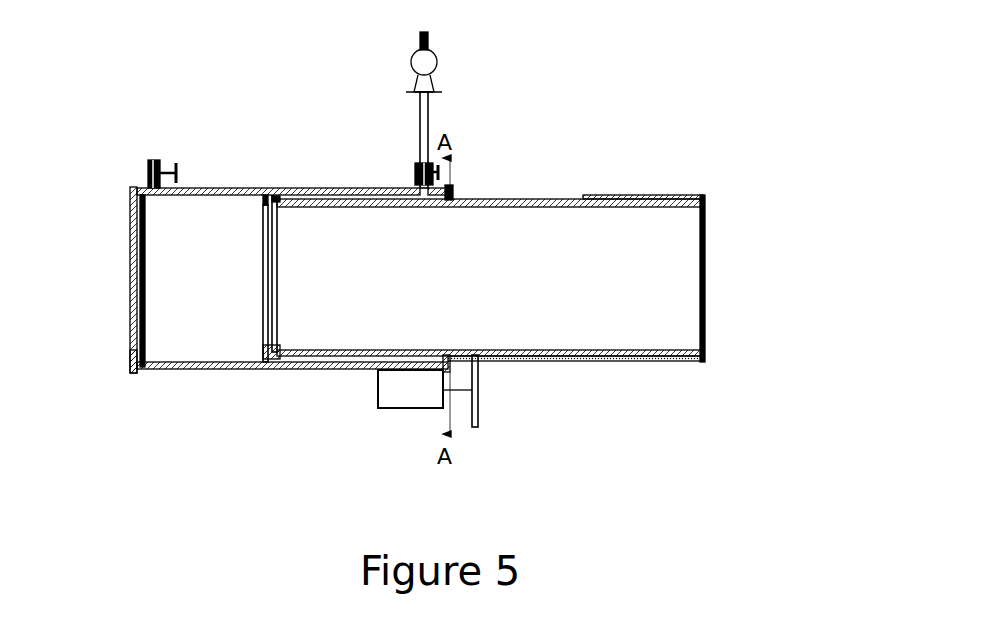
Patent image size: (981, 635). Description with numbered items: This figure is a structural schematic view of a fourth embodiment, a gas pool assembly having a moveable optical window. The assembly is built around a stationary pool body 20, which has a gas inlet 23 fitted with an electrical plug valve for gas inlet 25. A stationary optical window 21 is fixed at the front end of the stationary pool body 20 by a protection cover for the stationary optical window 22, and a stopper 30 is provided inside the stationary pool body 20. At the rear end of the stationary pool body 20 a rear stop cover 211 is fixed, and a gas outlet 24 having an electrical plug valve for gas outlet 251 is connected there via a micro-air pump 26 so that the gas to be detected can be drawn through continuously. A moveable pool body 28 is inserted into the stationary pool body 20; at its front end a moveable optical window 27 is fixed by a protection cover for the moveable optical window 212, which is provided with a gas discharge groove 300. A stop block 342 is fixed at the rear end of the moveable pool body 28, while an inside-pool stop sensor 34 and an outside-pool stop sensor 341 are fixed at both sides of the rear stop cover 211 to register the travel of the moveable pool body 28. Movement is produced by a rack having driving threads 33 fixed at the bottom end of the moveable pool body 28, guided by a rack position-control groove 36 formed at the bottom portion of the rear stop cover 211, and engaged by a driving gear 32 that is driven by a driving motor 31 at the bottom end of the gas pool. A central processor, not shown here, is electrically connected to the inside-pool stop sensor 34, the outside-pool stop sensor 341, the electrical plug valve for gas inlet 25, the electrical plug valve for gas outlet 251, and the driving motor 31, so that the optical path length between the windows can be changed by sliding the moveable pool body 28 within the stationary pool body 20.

The stationary pool body 20 is at (200, 340).
The stationary optical window 21 is at (132, 375).
The protection cover for the stationary optical window 22 is at (132, 300).
The gas inlet 23 is at (148, 163).
The gas outlet 24 is at (419, 34).
The electrical plug valve for gas inlet 25 is at (174, 176).
The micro-air pump 26 is at (423, 82).
The moveable optical window 27 is at (277, 335).
The moveable pool body 28 is at (646, 334).
The stopper 30 is at (142, 200).
The driving motor 31 is at (410, 410).
The driving gear 32 is at (478, 400).
The rack having driving threads 33 is at (680, 360).
The inside-pool stop sensor 34 is at (415, 185).
The rack position-control groove 36 is at (476, 358).
The rear stop cover 211 is at (453, 188).
The protection cover for the moveable optical window 212 is at (275, 196).
The electrical plug valve for gas outlet 251 is at (416, 165).
The gas discharge groove 300 is at (264, 197).
The outside-pool stop sensor 341 is at (456, 197).
The stop block 342 is at (690, 197).